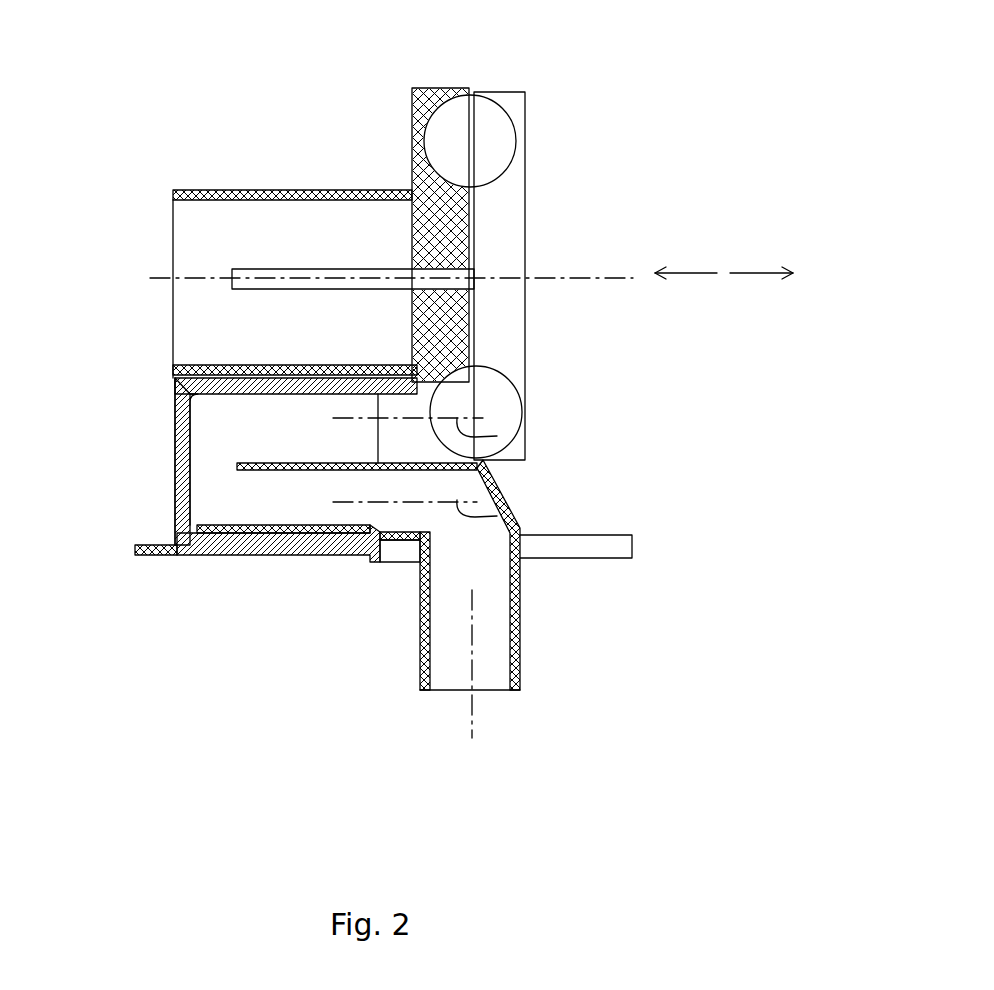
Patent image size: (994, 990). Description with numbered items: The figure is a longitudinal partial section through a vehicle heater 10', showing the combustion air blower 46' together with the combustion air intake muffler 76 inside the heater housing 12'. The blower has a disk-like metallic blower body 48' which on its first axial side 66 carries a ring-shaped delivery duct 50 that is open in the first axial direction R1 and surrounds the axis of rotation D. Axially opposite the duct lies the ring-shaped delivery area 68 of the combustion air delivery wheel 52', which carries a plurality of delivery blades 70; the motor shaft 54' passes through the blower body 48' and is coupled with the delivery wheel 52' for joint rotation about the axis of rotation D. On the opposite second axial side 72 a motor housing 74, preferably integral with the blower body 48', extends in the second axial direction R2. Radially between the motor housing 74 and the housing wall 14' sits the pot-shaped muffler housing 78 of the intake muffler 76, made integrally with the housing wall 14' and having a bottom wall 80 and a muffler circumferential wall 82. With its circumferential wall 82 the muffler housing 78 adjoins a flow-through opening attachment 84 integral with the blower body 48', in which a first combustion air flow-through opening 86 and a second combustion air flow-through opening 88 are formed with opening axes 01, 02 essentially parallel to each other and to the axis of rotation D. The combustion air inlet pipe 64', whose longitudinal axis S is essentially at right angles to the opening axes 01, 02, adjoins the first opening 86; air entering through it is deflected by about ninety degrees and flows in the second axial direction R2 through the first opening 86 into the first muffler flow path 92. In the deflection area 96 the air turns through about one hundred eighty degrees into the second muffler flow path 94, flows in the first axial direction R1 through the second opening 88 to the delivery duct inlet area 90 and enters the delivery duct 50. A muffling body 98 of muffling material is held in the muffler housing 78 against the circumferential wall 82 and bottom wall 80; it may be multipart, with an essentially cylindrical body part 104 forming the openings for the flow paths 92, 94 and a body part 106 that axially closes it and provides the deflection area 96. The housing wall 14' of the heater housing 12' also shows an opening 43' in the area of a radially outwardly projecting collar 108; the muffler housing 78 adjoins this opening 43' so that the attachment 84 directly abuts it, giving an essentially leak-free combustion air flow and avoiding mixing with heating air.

The second axial side 72 is at (347, 95).
The motor housing 74 is at (170, 193).
The blower body 48' is at (449, 203).
The ring-shaped delivery area 68 is at (508, 100).
The delivery duct 50 is at (443, 138).
The combustion air delivery wheel 52' is at (535, 276).
The first axial side 66 is at (497, 217).
The combustion air blower 46' is at (684, 44).
The pump 10' is at (754, 100).
The second combustion air flow-through opening 88 is at (413, 397).
The motor shaft 54' is at (279, 249).
The axis of rotation D is at (560, 272).
The first axial direction R1 is at (757, 268).
The second axial direction R2 is at (700, 273).
The bottom wall 80 is at (172, 393).
The muffler circumferential wall 82 is at (263, 365).
The muffling body 98 is at (175, 417).
The body part 106 is at (173, 448).
The deflection area 96 is at (172, 512).
The second muffler flow path 94 is at (260, 422).
The cylindrically shaped body part 104 is at (255, 553).
The first muffler flow path 92 is at (305, 498).
The muffler housing 78 is at (175, 507).
The housing wall 14' is at (165, 584).
The flow-through opening attachment 84 is at (400, 543).
The first combustion air flow-through opening 86 is at (358, 513).
The delivery blades 70 is at (505, 410).
The delivery duct inlet area 90 is at (462, 393).
The opening axis 02 is at (497, 436).
The opening axis 01 is at (497, 516).
The combustion air inlet pipe 64' is at (513, 575).
The radially outwardly projecting collar 108 is at (632, 558).
The opening 43' is at (645, 503).
The longitudinal axis S is at (475, 715).
The heater housing 12' is at (109, 651).
The combustion air intake muffler 76 is at (203, 595).